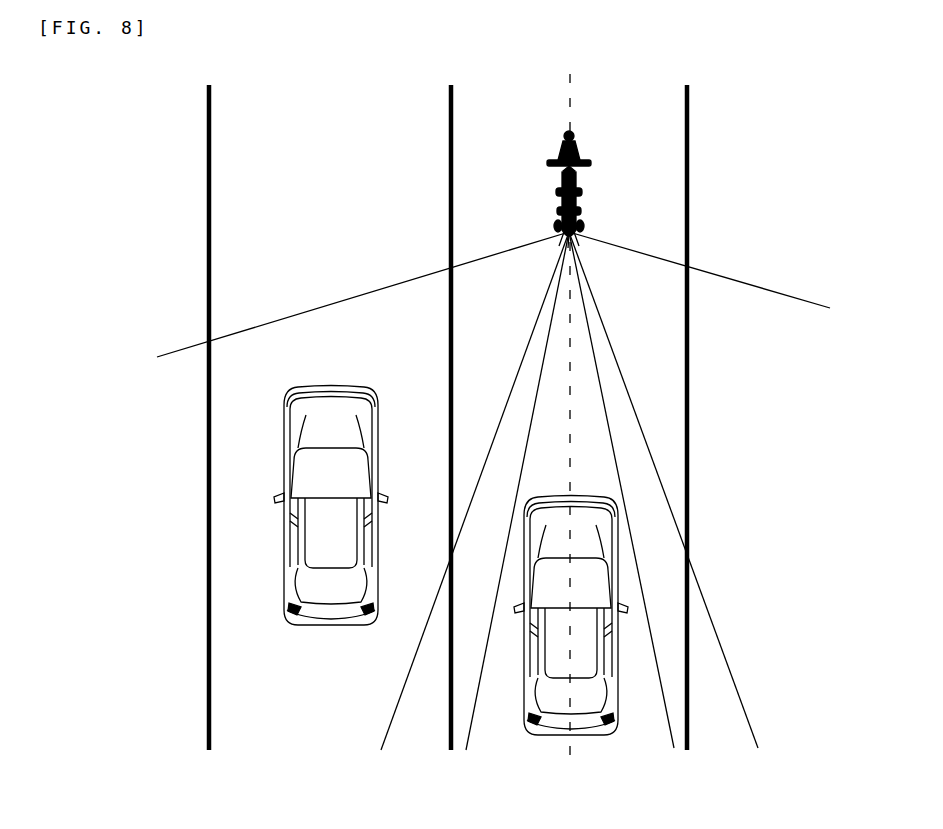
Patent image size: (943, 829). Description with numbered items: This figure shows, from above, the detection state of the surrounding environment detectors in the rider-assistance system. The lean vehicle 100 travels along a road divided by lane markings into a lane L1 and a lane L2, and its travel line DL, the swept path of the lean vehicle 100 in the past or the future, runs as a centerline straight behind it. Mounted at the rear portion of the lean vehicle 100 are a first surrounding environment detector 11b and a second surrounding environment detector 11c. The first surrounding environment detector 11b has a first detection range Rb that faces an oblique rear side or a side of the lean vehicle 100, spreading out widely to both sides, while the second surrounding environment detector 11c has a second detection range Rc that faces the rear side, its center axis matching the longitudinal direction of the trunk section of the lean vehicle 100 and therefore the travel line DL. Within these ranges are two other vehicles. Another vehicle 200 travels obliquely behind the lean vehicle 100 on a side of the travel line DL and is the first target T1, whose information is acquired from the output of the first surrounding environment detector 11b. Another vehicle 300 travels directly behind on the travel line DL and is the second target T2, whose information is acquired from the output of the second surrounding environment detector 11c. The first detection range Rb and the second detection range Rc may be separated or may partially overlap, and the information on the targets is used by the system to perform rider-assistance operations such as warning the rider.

The lean vehicle 100 is at (582, 150).
The first surrounding environment detector 11b is at (560, 224).
The second surrounding environment detector 11c is at (583, 228).
The travel line DL is at (573, 82).
The lane L1 is at (657, 147).
The lane L2 is at (233, 718).
The first detection range Rb is at (225, 333).
The second detection range Rc is at (668, 698).
The first target T1 is at (311, 528).
The another vehicle 200 is at (320, 585).
The second target T2 is at (552, 638).
The another vehicle 300 is at (560, 695).